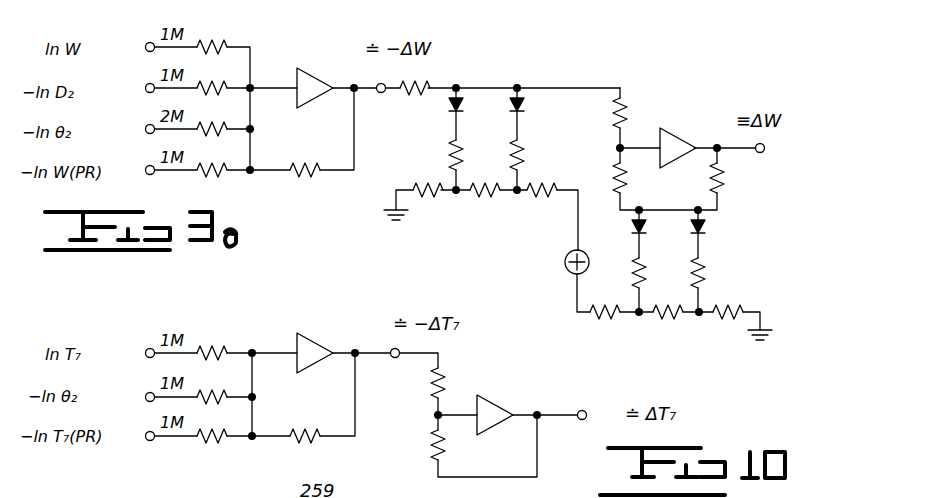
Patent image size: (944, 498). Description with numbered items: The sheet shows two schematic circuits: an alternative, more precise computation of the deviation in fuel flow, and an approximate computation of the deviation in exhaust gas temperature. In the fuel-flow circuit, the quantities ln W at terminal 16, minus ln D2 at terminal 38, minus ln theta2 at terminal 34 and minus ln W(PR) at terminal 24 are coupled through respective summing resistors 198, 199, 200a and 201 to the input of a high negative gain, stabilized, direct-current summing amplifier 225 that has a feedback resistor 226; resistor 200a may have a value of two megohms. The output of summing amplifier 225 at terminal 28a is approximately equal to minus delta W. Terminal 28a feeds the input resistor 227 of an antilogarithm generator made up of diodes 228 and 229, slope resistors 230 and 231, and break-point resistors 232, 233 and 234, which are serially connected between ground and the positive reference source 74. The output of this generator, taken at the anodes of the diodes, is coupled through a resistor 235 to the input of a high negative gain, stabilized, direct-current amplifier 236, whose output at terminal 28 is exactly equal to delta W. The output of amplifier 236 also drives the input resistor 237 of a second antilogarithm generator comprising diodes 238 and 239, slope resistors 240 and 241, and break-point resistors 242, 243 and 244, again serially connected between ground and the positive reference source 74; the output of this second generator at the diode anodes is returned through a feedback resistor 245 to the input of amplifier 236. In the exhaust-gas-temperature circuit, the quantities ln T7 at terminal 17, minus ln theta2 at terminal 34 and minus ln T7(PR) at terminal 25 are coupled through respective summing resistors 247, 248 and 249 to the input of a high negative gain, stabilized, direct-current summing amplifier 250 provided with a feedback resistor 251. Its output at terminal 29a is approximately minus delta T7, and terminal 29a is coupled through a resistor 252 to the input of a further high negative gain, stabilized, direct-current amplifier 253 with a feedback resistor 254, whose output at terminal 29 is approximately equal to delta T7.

In FIG. 9A, the terminal 16 is at (152, 42).
In FIG. 9A, the terminal 38 is at (152, 83).
In FIG. 9A, the terminal 34 is at (152, 124).
In FIG. 10, the terminal 34 is at (152, 392).
In FIG. 9A, the terminal 24 is at (146, 174).
In FIG. 9A, the summing resistor 198 is at (214, 47).
In FIG. 9A, the summing resistor 199 is at (214, 88).
In FIG. 9A, the summing resistor 200a is at (216, 129).
In FIG. 9A, the summing resistor 201 is at (210, 170).
In FIG. 9A, the summing amplifier 225 is at (316, 68).
In FIG. 9A, the feedback resistor 226 is at (300, 180).
In FIG. 9A, the terminal 28a is at (376, 94).
In FIG. 9A, the input resistor 227 is at (422, 94).
In FIG. 9A, the diode 228 is at (462, 104).
In FIG. 9A, the diode 229 is at (525, 103).
In FIG. 9A, the slope resistor 230 is at (478, 144).
In FIG. 9A, the slope resistor 231 is at (521, 148).
In FIG. 9A, the break-point resistor 232 is at (434, 196).
In FIG. 9A, the break-point resistor 233 is at (484, 197).
In FIG. 9A, the break-point resistor 234 is at (544, 198).
In FIG. 9A, the positive reference source 74 is at (565, 262).
In FIG. 9A, the resistor 235 is at (626, 116).
In FIG. 9A, the amplifier 236 is at (678, 138).
In FIG. 9A, the terminal 28 is at (765, 147).
In FIG. 9A, the feedback resistor 245 is at (630, 184).
In FIG. 9A, the input resistor 237 is at (722, 184).
In FIG. 9A, the diode 239 is at (660, 226).
In FIG. 9A, the diode 238 is at (706, 228).
In FIG. 9A, the slope resistor 241 is at (664, 262).
In FIG. 9A, the slope resistor 240 is at (702, 272).
In FIG. 9A, the break-point resistor 244 is at (598, 318).
In FIG. 9A, the break-point resistor 243 is at (665, 320).
In FIG. 9A, the break-point resistor 242 is at (726, 318).
In FIG. 10, the terminal 17 is at (152, 348).
In FIG. 10, the terminal 25 is at (146, 440).
In FIG. 10, the summing resistor 247 is at (214, 350).
In FIG. 10, the summing resistor 248 is at (202, 394).
In FIG. 10, the summing resistor 249 is at (204, 438).
In FIG. 10, the summing amplifier 250 is at (304, 368).
In FIG. 10, the feedback resistor 251 is at (298, 440).
In FIG. 10, the terminal 29a is at (392, 358).
In FIG. 10, the resistor 252 is at (444, 382).
In FIG. 10, the amplifier 253 is at (494, 404).
In FIG. 10, the feedback resistor 254 is at (442, 448).
In FIG. 10, the terminal 29 is at (580, 420).